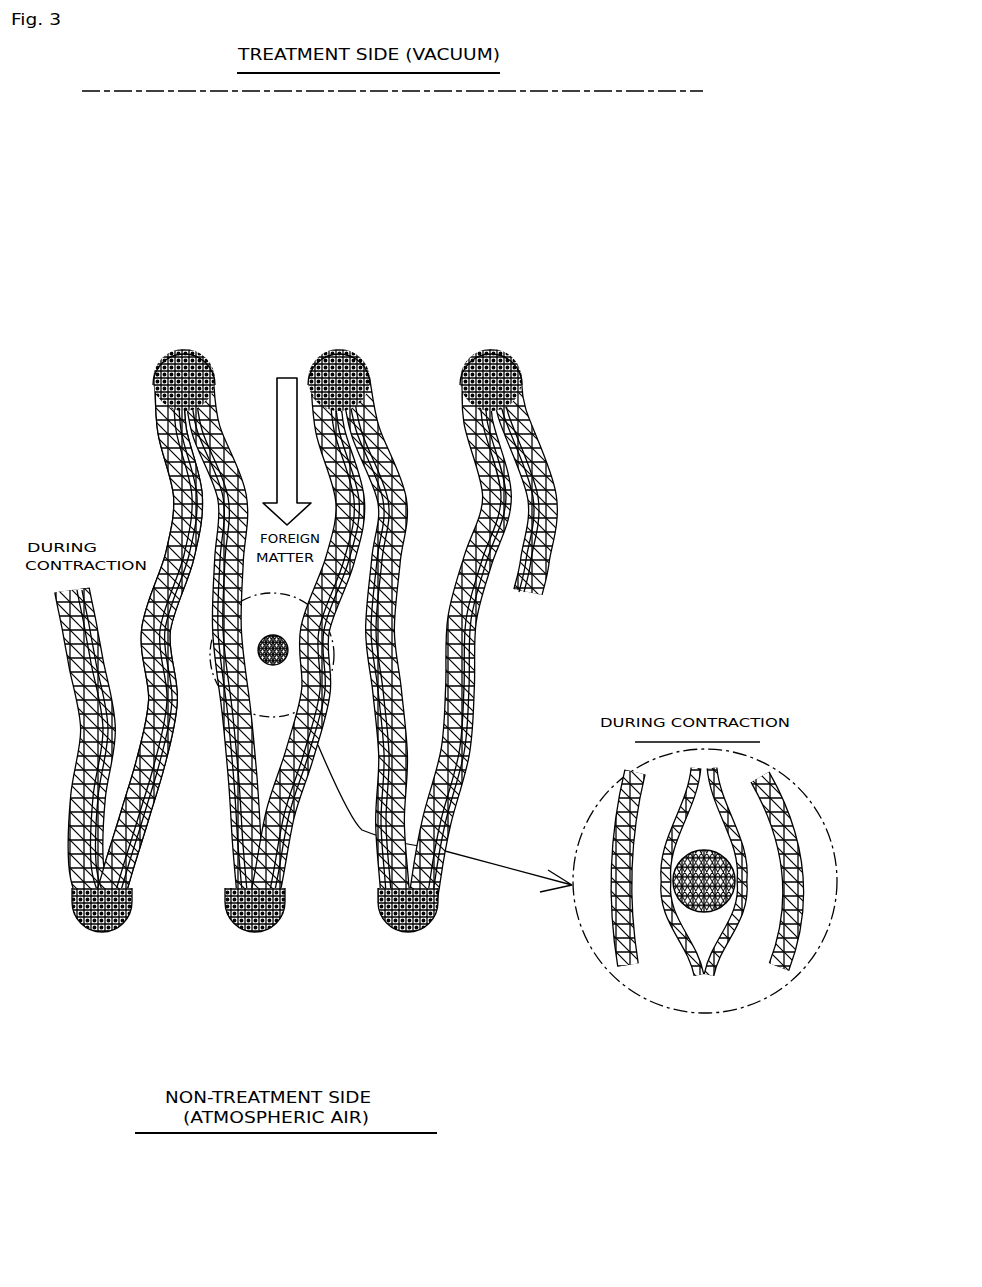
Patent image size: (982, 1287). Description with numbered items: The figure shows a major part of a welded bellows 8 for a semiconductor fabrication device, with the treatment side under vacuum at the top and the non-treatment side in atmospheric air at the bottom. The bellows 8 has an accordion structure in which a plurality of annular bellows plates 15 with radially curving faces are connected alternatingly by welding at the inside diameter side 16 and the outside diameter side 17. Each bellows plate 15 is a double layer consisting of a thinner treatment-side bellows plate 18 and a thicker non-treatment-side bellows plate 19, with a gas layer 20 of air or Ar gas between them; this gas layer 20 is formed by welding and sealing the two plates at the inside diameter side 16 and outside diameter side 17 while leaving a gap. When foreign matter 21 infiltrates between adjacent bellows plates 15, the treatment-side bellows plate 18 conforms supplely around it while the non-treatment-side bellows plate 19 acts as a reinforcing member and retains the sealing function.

The bellows 8 is at (72, 345).
The bellows plate 15 is at (180, 492).
The inside diameter side 16 is at (183, 358).
The outside diameter side 17 is at (83, 925).
The treatment-side bellows plate 18 is at (300, 395).
The non-treatment-side bellows plate 19 is at (227, 867).
The gas layer 20 is at (400, 600).
The foreign matter 21 is at (290, 662).